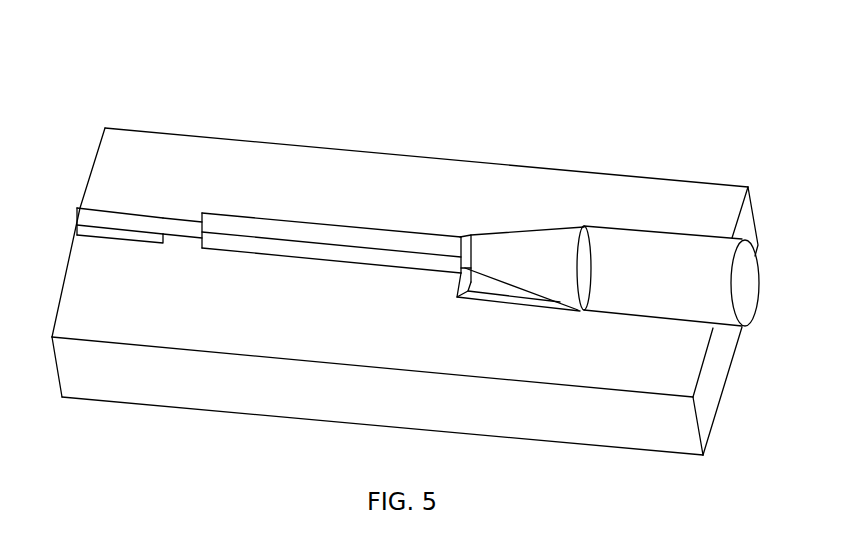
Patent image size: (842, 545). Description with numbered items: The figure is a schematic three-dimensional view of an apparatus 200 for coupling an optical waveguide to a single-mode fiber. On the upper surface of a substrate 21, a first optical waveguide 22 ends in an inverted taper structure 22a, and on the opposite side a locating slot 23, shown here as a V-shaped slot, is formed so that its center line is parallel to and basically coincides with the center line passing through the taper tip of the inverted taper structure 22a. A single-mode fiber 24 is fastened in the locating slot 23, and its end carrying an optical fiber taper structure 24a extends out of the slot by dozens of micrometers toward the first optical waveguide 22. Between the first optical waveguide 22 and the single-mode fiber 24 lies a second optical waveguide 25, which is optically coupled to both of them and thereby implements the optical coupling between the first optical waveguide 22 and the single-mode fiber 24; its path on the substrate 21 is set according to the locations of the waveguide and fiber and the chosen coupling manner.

The apparatus for coupling an optical waveguide to a single-mode fiber 200 is at (102, 104).
The substrate 21 is at (358, 180).
The first optical waveguide 22 is at (103, 237).
The inverted taper structure 22a is at (172, 239).
The locating slot 23 is at (517, 302).
The single-mode fiber 24 is at (625, 247).
The optical fiber taper structure 24a is at (500, 256).
The second optical waveguide 25 is at (327, 257).